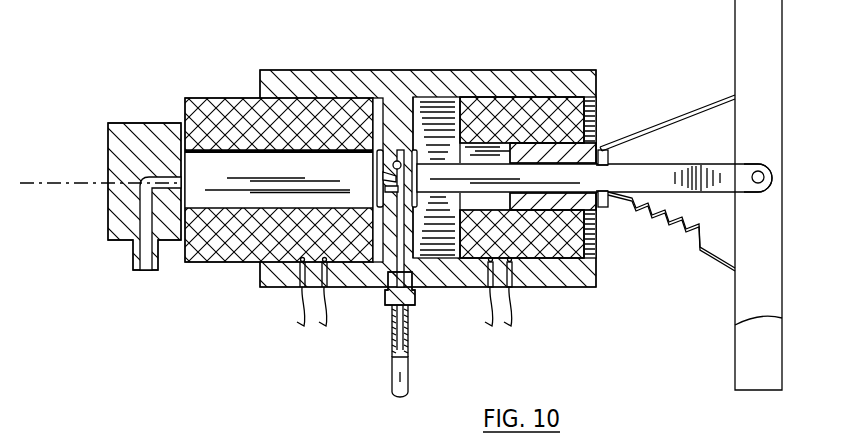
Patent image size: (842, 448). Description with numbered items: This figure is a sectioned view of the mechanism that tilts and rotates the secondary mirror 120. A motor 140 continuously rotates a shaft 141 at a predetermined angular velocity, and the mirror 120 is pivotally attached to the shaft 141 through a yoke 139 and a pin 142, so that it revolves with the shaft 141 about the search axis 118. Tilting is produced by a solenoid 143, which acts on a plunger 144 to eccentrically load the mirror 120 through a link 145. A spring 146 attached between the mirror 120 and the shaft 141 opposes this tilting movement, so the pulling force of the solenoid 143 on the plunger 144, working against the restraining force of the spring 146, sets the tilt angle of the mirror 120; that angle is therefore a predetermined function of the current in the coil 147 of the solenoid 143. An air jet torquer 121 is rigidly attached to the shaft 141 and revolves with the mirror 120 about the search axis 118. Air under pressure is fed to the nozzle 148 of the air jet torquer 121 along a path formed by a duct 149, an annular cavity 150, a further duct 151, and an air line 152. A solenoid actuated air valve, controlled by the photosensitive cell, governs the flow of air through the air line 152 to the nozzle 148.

The search axis 118 is at (90, 183).
The secondary mirror 120 is at (738, 325).
The air jet torquer 121 is at (123, 127).
The yoke 139 is at (727, 183).
The motor 140 is at (220, 263).
The shaft 141 is at (625, 175).
The pin 142 is at (755, 170).
The solenoid 143 is at (518, 105).
The plunger 144 is at (598, 148).
The link 145 is at (675, 113).
The spring 146 is at (687, 245).
The coil 147 is at (548, 253).
The nozzle 148 is at (148, 265).
The duct 149 is at (380, 173).
The annular cavity 150 is at (410, 203).
The duct 151 is at (400, 250).
The air line 152 is at (410, 327).